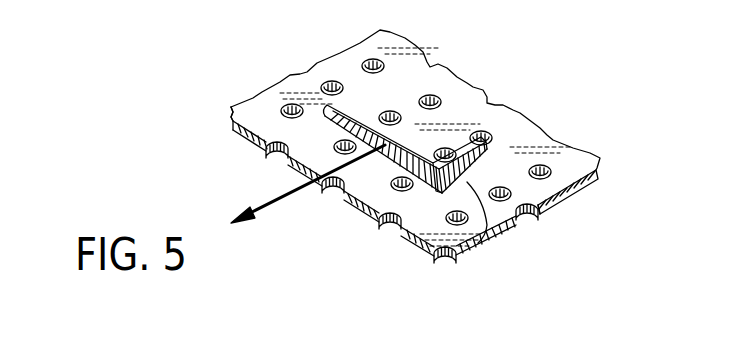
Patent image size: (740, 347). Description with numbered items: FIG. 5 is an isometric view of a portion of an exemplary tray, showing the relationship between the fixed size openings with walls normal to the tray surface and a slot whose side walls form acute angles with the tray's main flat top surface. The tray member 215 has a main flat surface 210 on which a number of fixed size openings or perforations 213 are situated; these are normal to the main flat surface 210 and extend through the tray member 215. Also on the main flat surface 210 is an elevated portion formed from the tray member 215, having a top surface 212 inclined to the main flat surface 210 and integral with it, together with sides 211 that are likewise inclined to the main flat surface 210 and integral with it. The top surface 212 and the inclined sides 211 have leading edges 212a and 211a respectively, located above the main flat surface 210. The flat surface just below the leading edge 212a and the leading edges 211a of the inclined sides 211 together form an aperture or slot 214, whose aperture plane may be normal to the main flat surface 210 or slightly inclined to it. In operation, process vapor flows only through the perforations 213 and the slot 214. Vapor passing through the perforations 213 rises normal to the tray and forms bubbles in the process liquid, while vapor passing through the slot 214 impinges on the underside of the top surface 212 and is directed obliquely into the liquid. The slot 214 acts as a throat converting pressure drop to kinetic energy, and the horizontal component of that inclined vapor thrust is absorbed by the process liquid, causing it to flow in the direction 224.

The main flat surface 210 is at (250, 108).
The inclined sides 211 is at (490, 238).
The leading edges of inclined sides 211a is at (440, 192).
The top surface 212 is at (367, 103).
The leading edge of top surface 212a is at (398, 149).
The perforations 213 is at (336, 82).
The slot 214 is at (345, 127).
The tray member 215 is at (220, 133).
The direction of liquid flow 224 is at (266, 213).